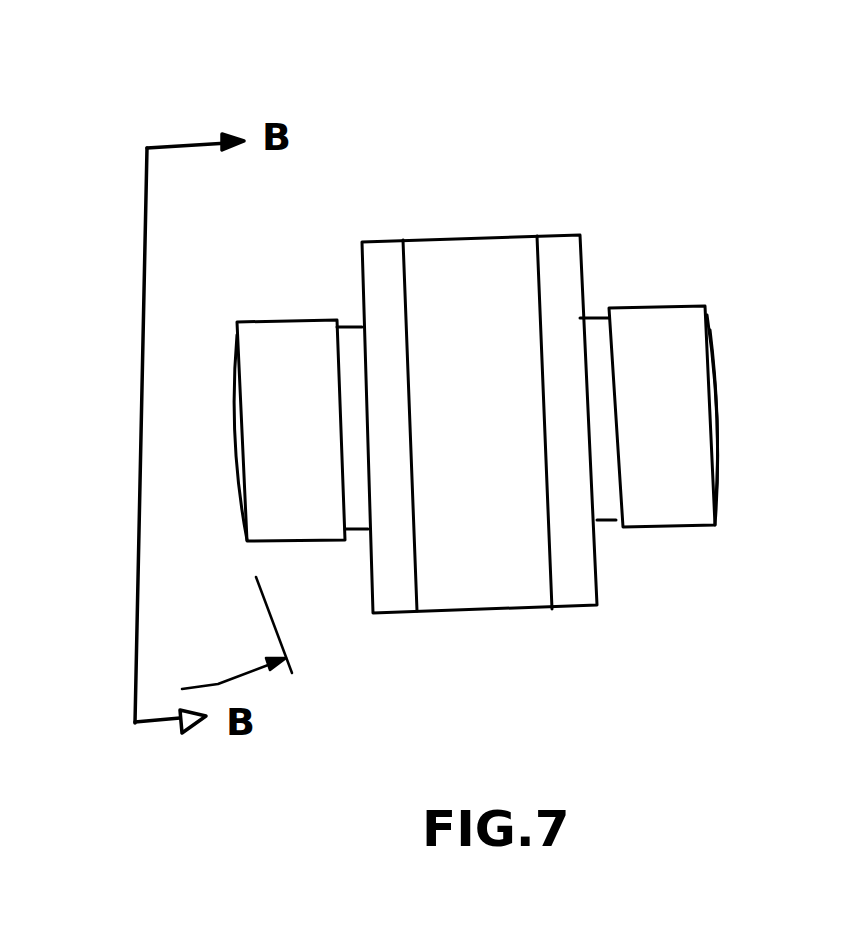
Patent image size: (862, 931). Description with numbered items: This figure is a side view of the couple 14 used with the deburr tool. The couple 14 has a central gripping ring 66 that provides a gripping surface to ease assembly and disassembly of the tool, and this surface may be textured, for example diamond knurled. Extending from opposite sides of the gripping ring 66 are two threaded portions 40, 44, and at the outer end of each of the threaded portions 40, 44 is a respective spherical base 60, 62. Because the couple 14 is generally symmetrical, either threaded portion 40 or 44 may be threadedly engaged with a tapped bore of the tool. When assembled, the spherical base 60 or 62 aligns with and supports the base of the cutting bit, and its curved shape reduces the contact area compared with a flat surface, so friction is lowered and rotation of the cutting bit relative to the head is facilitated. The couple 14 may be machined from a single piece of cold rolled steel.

The couple 14 is at (500, 71).
The gripping ring 66 is at (453, 232).
The threaded portion 40 is at (266, 318).
The threaded portion 44 is at (622, 308).
The spherical base 62 is at (730, 412).
The spherical base 60 is at (214, 456).